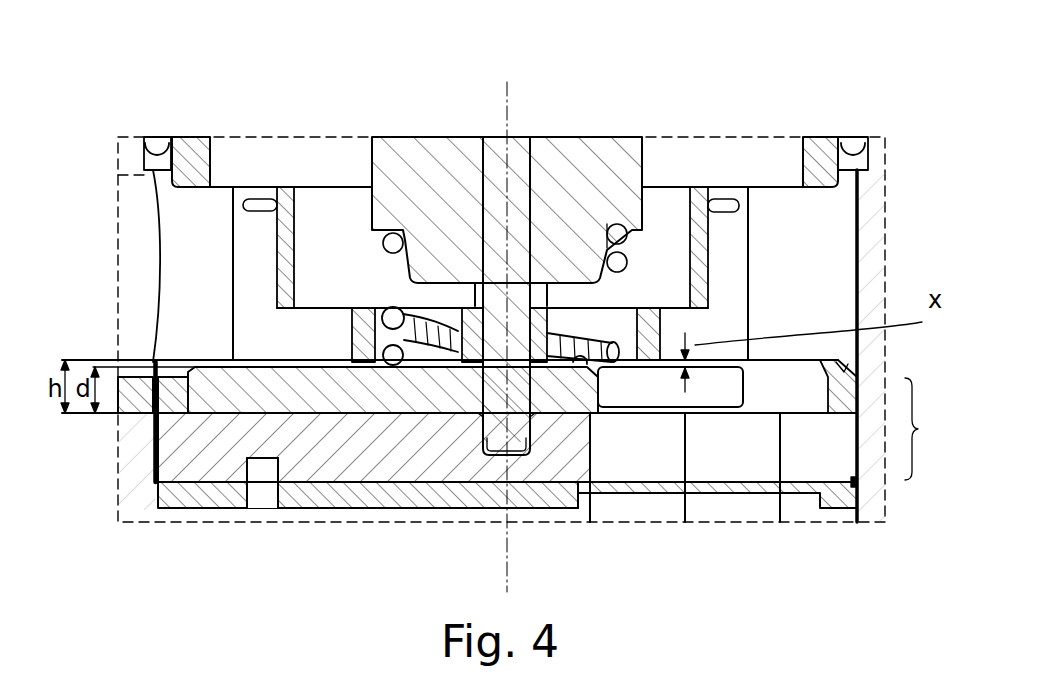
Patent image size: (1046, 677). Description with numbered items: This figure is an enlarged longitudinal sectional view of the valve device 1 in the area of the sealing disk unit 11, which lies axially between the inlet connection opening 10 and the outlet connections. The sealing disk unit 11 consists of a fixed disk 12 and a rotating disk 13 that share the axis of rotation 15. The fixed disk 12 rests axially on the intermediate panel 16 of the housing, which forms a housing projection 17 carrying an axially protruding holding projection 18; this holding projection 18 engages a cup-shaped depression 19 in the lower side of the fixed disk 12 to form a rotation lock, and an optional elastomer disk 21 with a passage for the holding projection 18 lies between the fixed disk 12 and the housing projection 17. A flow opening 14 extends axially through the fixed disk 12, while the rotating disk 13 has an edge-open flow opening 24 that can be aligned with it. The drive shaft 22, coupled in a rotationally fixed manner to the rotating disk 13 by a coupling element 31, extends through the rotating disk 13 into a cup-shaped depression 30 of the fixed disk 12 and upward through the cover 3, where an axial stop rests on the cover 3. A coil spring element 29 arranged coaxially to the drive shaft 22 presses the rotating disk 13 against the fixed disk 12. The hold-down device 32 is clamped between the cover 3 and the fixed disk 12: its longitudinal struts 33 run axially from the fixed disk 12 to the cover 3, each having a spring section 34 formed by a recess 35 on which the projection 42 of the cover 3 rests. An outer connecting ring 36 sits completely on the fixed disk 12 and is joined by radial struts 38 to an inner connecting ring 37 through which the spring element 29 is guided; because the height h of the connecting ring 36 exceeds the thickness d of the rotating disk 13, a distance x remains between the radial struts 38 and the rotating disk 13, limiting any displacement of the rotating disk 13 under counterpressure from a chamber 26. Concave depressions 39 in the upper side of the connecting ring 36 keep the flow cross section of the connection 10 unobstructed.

The valve device 1 is at (108, 60).
The cover 3 is at (667, 150).
The connection opening 10 is at (153, 280).
The sealing disk unit 11 is at (927, 429).
The fixed disk 12 is at (186, 437).
The rotating disk 13 is at (214, 373).
The flow opening 14 is at (793, 470).
The axis of rotation 15 is at (507, 97).
The intermediate panel 16 is at (820, 362).
The housing projection 17 is at (178, 517).
The holding projection 18 is at (257, 490).
The depression 19 is at (278, 470).
The elastomer disk 21 is at (483, 497).
The drive shaft 22 is at (403, 147).
The flow opening 24 is at (622, 392).
The chamber 26 is at (672, 510).
The spring element 29 is at (623, 262).
The cup-shaped depression 30 is at (517, 450).
The coupling element 31 is at (490, 393).
The hold-down device 32 is at (212, 238).
The longitudinal strut 33 is at (738, 278).
The spring section 34 is at (240, 207).
The recess 35 is at (273, 200).
The connecting ring 36 is at (845, 397).
The connecting ring 37 is at (368, 305).
The radial strut 38 is at (300, 342).
The depression 39 is at (838, 370).
The projection 42 is at (198, 143).